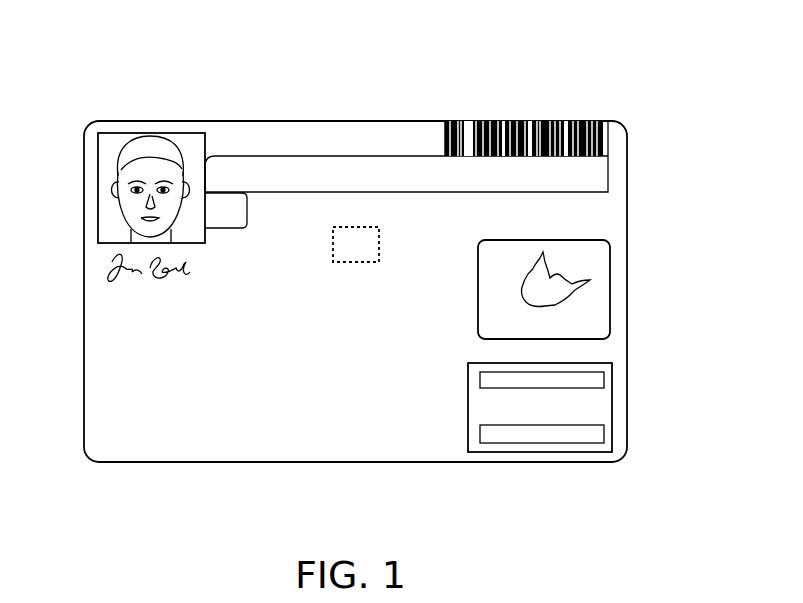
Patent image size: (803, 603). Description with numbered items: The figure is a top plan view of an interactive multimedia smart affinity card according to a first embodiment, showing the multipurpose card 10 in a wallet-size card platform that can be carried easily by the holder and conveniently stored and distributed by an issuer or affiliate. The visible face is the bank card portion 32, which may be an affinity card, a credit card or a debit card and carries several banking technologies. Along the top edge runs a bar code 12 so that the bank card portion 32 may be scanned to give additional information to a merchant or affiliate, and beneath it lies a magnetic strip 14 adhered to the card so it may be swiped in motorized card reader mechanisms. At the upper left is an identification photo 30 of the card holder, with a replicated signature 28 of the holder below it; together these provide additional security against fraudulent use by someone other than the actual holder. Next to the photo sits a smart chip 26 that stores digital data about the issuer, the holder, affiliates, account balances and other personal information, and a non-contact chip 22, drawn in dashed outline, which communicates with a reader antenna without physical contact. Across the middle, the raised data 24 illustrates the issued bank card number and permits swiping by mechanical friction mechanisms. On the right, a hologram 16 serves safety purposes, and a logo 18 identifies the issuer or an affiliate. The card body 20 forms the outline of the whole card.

The multipurpose card 10 is at (585, 70).
The bar code 12 is at (605, 135).
The magnetic strip 14 is at (605, 176).
The hologram 16 is at (593, 288).
The logo 18 is at (590, 405).
The card body 20 is at (622, 455).
The non-contact chip 22 is at (353, 227).
The raised data 24 is at (323, 303).
The smart chip 26 is at (247, 210).
The replicated signature 28 is at (110, 272).
The identification photo 30 is at (130, 204).
The bank card portion 32 is at (135, 298).